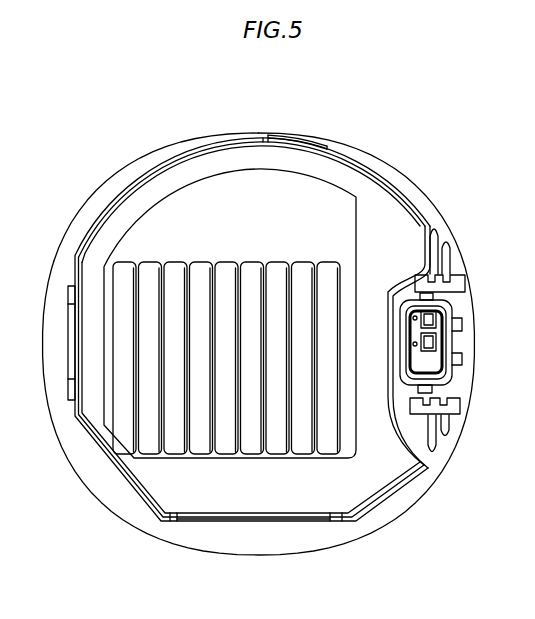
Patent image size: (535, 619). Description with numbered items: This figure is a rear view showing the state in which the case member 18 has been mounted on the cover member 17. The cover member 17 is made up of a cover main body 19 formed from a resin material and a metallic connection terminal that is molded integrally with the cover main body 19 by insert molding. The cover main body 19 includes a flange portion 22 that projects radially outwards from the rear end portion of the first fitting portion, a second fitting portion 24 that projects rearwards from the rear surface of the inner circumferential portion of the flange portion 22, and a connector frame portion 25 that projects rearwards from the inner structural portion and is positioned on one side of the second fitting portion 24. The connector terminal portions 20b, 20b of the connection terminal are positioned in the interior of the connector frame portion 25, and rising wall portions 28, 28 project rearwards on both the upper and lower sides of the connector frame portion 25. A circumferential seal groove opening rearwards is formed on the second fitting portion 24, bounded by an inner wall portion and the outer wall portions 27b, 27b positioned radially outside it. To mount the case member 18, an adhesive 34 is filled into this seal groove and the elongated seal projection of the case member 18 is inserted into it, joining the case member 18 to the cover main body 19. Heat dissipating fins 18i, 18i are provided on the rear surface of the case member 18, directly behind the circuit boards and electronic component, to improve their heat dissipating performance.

The cover member 17 is at (227, 133).
The case member 18 is at (348, 170).
The heat dissipating fins 18i is at (135, 392).
The cover main body 19 is at (265, 133).
The connector terminal portions 20b is at (432, 318).
The flange portion 22 is at (153, 156).
The second fitting portion 24 is at (78, 248).
The connector frame portion 25 is at (457, 331).
The outer wall portions 27b is at (110, 200).
The rising wall portions 28 is at (464, 277).
The adhesive 34 is at (177, 521).